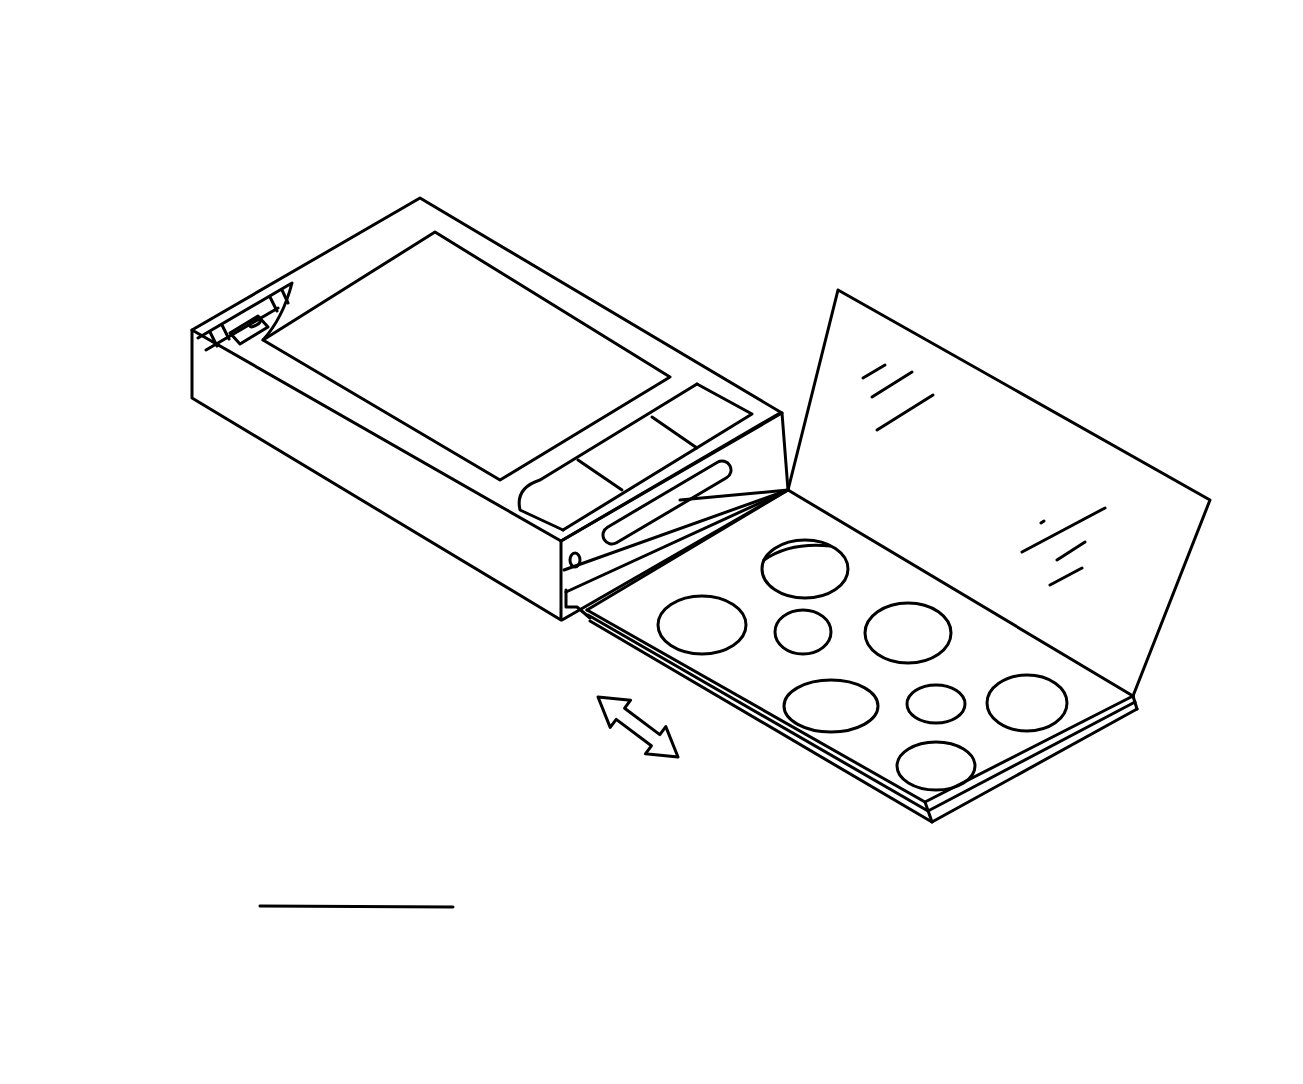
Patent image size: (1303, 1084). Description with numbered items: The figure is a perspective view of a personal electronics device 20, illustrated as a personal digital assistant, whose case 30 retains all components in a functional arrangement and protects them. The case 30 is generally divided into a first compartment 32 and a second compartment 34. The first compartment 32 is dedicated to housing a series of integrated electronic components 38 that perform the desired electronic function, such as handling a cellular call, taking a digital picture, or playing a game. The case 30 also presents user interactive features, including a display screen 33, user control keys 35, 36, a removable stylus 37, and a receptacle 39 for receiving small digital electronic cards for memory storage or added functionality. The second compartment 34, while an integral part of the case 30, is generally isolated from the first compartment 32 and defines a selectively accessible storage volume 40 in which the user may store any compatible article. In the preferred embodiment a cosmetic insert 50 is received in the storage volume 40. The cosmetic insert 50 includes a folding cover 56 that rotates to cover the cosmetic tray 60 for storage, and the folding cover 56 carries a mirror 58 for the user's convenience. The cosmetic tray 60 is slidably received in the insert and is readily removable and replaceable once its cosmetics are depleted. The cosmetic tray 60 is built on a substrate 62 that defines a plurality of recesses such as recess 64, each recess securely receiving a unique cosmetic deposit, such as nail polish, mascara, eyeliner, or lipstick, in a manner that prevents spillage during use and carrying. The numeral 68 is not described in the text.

The personal electronics device 20 is at (654, 192).
The case 30 is at (222, 422).
The first compartment 32 is at (231, 300).
The display screen 33 is at (350, 282).
The second compartment 34 is at (575, 612).
The user control key 35 is at (523, 490).
The user control key 36 is at (703, 387).
The removable stylus 37 is at (560, 558).
The integrated electronic components 38 is at (256, 292).
The receptacle 39 is at (556, 541).
The storage volume 40 is at (738, 490).
The cosmetic insert 50 is at (1110, 730).
The folding cover 56 is at (903, 327).
The mirror 58 is at (1003, 437).
The cosmetic tray 60 is at (753, 722).
The substrate 62 is at (752, 677).
The recess 64 is at (822, 546).
The well 68 is at (843, 705).